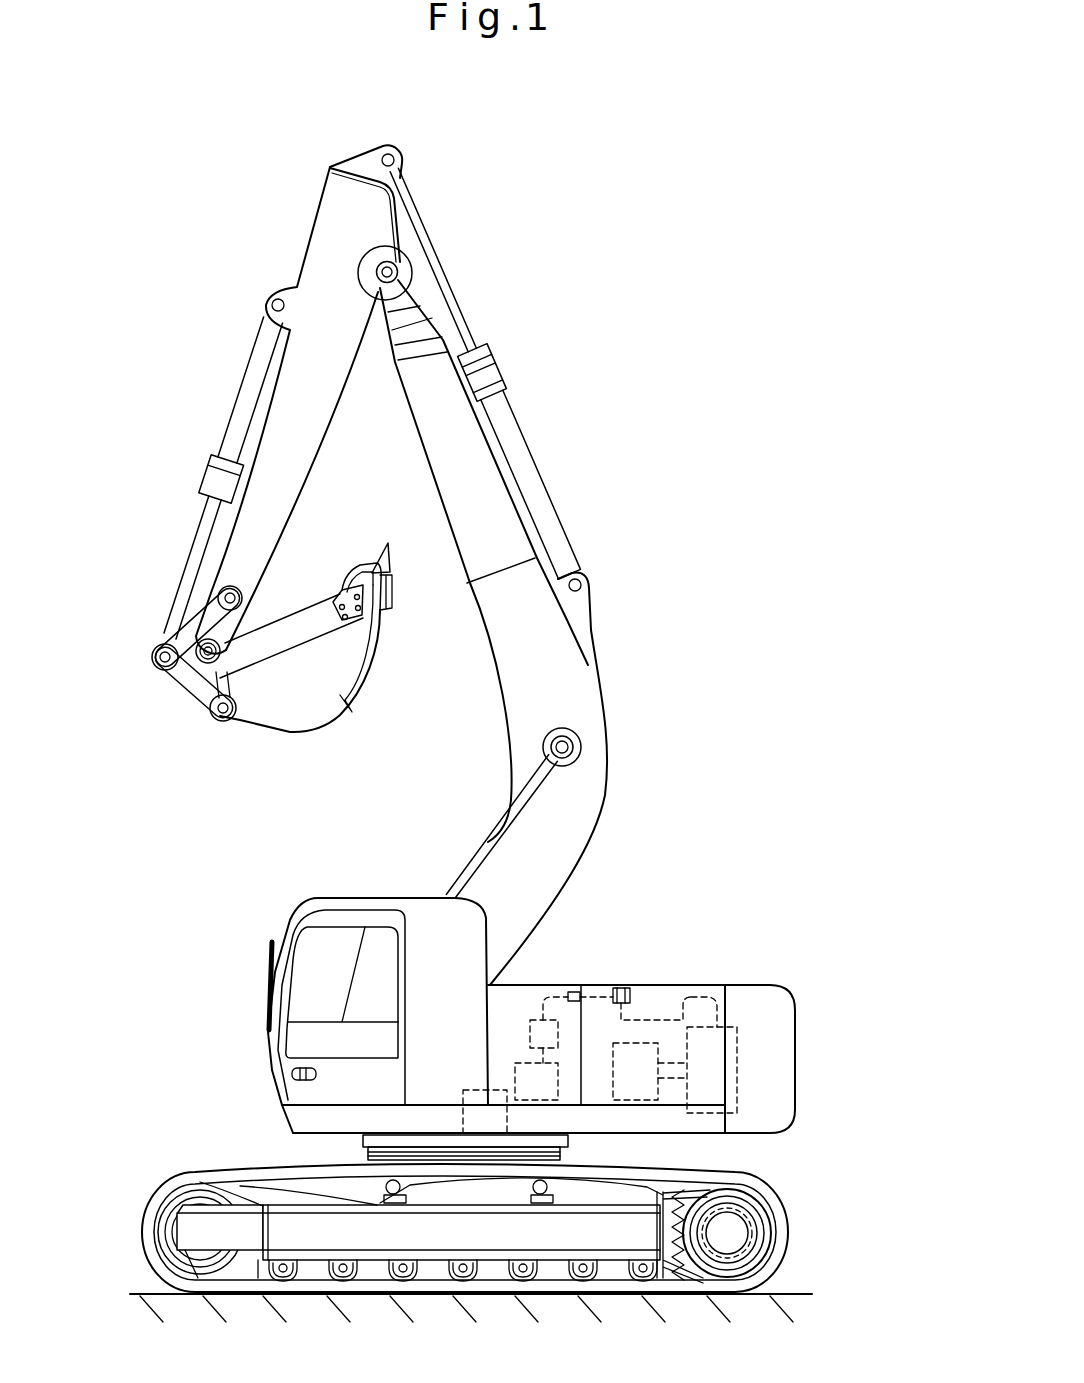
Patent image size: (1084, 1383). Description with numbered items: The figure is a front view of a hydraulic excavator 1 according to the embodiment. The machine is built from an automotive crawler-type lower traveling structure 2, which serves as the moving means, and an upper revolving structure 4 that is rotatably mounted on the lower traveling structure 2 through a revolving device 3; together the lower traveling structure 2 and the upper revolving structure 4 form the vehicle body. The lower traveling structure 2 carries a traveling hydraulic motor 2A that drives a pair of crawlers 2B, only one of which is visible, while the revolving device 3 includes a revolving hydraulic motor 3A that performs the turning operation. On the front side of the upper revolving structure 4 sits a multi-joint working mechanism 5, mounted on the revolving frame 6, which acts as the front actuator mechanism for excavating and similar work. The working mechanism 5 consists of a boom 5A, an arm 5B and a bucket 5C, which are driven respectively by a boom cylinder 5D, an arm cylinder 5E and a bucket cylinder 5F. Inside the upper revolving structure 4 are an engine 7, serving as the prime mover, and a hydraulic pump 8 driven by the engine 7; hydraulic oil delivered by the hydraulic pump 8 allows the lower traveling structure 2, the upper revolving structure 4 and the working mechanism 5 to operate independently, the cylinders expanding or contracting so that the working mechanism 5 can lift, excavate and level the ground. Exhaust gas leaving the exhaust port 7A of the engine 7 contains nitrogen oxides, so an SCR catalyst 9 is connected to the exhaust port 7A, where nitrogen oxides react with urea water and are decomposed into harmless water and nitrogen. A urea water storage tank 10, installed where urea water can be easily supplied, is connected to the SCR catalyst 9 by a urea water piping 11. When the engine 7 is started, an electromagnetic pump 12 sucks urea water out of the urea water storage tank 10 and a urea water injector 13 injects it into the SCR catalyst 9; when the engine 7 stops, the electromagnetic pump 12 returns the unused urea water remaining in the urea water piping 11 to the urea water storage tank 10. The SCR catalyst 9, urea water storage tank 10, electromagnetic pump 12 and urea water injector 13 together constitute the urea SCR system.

The hydraulic excavator 1 is at (541, 328).
The lower traveling structure 2 is at (795, 1198).
The hydraulic motor 2A is at (727, 1253).
The crawlers 2B is at (423, 1287).
The revolving device 3 is at (390, 1140).
The hydraulic motor 3A is at (505, 1120).
The upper revolving structure 4 is at (752, 958).
The working mechanism 5 is at (245, 288).
The boom 5A is at (582, 700).
The arm 5B is at (300, 443).
The bucket 5C is at (315, 713).
The boom cylinder 5D is at (505, 820).
The arm cylinder 5E is at (538, 500).
The bucket cylinder 5F is at (243, 407).
The revolving frame 6 is at (688, 1127).
The engine 7 is at (737, 1060).
The exhaust port 7A is at (707, 997).
The hydraulic pump 8 is at (640, 1080).
The SCR catalyst 9 is at (660, 995).
The urea water storage tank 10 is at (527, 1075).
The urea water piping 11 is at (572, 990).
The electromagnetic pump 12 is at (537, 1018).
The urea water injector 13 is at (618, 990).